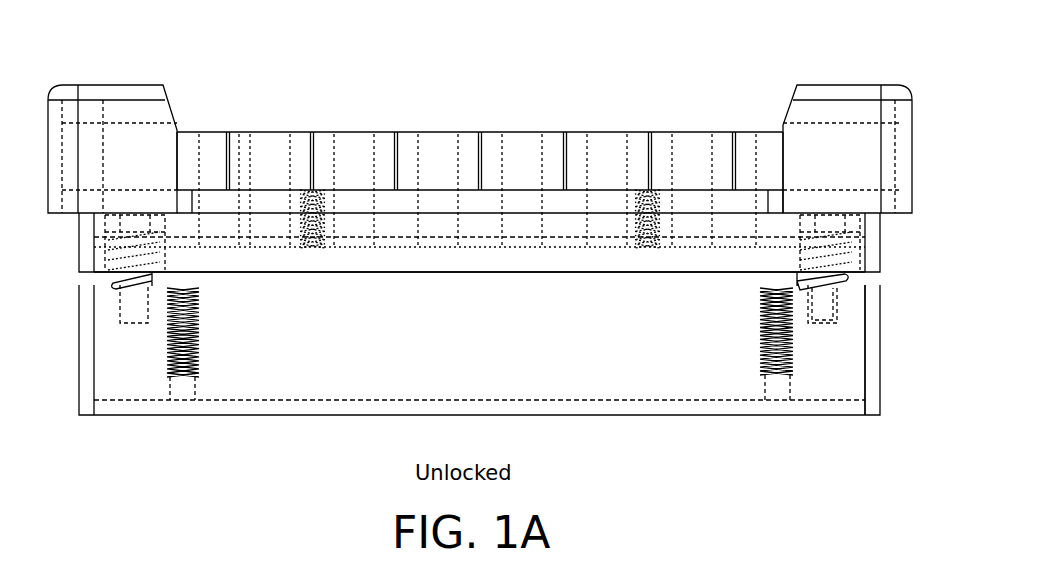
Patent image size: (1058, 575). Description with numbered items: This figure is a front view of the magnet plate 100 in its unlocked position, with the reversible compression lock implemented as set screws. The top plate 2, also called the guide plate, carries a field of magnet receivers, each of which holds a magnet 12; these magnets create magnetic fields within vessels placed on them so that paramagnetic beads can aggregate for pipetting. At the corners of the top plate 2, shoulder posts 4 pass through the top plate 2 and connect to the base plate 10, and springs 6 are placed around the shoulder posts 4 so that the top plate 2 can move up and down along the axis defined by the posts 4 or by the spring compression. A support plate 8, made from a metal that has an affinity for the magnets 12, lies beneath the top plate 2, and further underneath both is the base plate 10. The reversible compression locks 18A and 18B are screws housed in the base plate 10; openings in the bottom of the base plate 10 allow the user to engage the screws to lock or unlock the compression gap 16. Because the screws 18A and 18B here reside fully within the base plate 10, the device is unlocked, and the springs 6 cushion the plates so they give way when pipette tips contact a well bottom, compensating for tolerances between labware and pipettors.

The magnet plate 100 is at (160, 470).
The top plate 2 is at (892, 83).
The magnet 12 is at (300, 124).
The compression gap 16 is at (79, 278).
The spring 6 is at (833, 265).
The shoulder post 4 is at (838, 309).
The base plate 10 is at (818, 358).
The reversible compression lock 18A is at (165, 349).
The reversible compression lock 18B is at (762, 367).
The support plate 8 is at (698, 266).